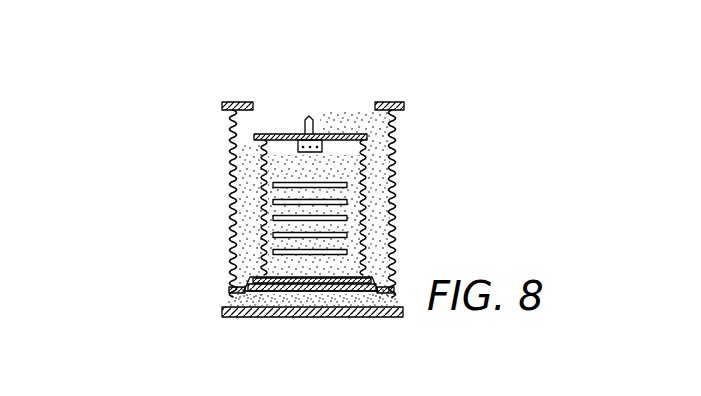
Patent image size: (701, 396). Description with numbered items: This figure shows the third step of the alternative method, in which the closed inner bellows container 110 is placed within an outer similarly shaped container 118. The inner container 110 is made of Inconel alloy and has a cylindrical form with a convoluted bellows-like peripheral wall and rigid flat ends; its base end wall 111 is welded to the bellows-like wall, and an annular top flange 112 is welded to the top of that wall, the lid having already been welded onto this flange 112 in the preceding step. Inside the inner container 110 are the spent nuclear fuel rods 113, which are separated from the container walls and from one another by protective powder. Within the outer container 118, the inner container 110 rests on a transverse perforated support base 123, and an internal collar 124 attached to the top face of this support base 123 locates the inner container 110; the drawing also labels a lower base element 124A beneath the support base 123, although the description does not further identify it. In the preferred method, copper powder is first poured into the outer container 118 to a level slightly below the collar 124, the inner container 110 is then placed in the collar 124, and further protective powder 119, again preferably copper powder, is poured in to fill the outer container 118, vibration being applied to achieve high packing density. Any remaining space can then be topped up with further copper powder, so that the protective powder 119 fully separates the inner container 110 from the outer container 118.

The annular top flange 112 is at (270, 134).
The spent nuclear fuel rods 113 is at (342, 178).
The protective powder 119 is at (374, 183).
The inner bellows container 110 is at (358, 232).
The base end wall 111 is at (343, 276).
The outer container 118 is at (228, 156).
The internal collar 124 is at (247, 278).
The base plate 124A is at (233, 297).
The transverse perforated support base 123 is at (345, 293).